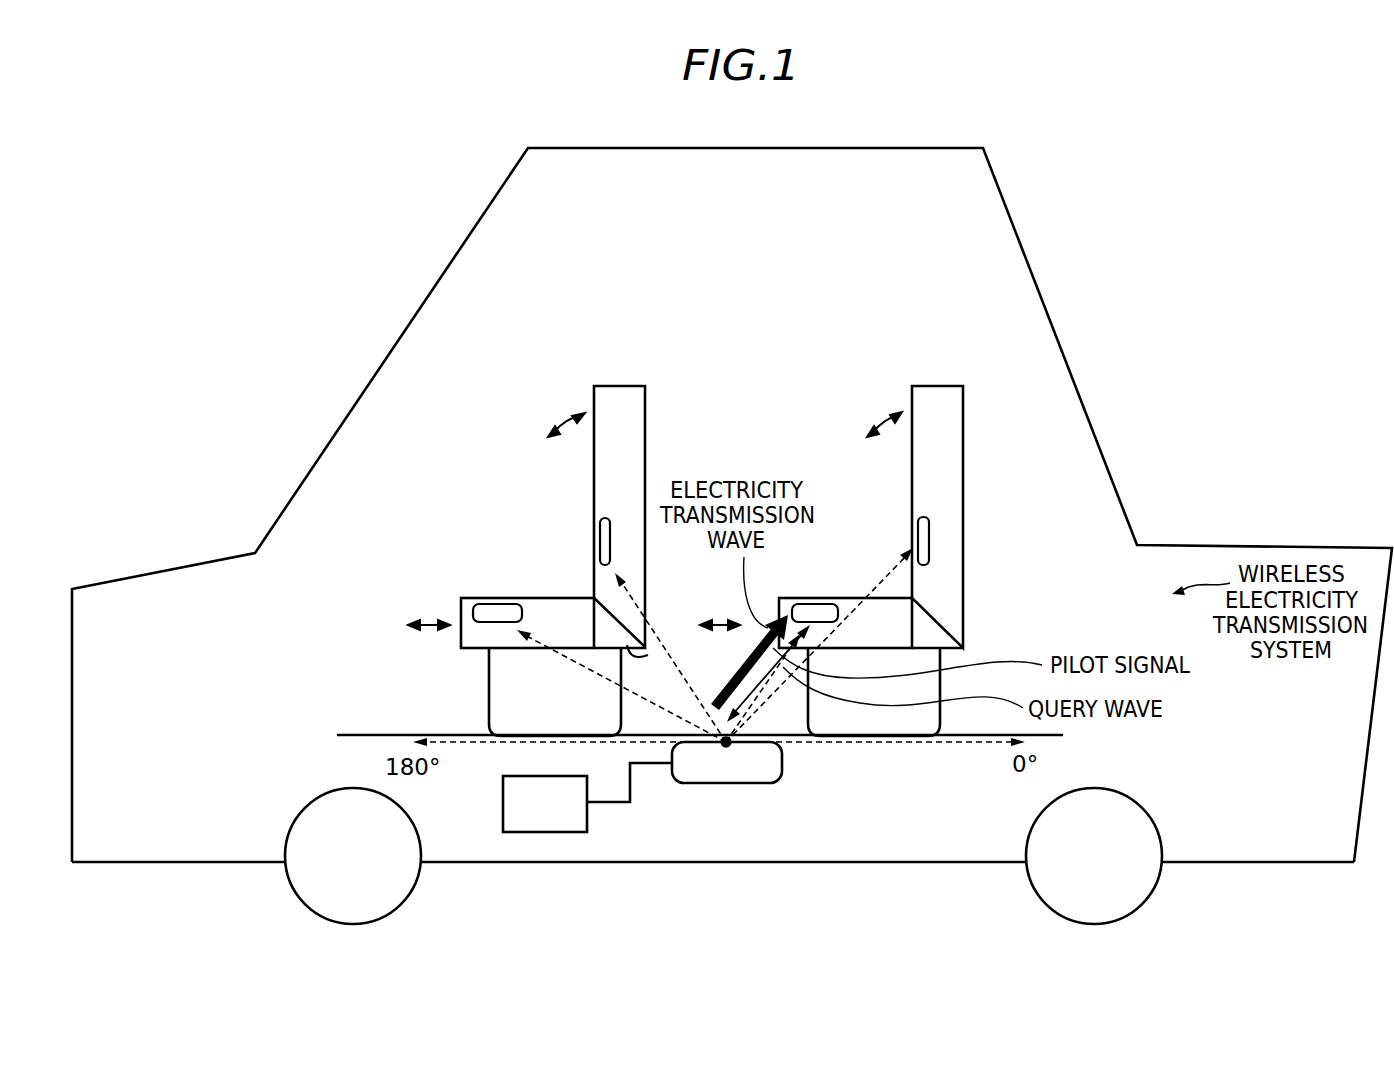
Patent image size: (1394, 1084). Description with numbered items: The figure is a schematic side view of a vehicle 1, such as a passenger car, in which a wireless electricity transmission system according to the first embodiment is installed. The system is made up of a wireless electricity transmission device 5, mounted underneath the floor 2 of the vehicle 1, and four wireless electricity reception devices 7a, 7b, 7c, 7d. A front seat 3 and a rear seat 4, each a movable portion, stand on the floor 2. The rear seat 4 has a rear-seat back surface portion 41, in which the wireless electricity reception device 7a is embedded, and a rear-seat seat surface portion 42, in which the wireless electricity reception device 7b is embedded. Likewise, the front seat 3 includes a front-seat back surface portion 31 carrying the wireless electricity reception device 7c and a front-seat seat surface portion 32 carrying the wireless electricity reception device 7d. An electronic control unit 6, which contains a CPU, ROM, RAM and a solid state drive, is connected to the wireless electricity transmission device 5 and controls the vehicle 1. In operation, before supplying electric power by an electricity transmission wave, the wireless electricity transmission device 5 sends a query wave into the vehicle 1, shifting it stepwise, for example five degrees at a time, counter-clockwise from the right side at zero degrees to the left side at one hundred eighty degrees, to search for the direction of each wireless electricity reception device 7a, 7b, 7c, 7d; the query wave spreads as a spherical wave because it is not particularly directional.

The vehicle 1 is at (945, 148).
The floor 2 is at (340, 735).
The front seat 3 is at (559, 501).
The rear seat 4 is at (1025, 502).
The wireless electricity transmission device 5 is at (730, 785).
The electronic control unit (ECU) 6 is at (530, 776).
The wireless electricity reception device 7a is at (930, 540).
The wireless electricity reception device 7b is at (813, 604).
The wireless electricity reception device 7c is at (600, 517).
The wireless electricity reception device 7d is at (494, 604).
The front-seat back surface portion 31 is at (627, 427).
The front-seat seat surface portion 32 is at (652, 652).
The rear-seat back surface portion 41 is at (952, 552).
The rear-seat seat surface portion 42 is at (939, 636).